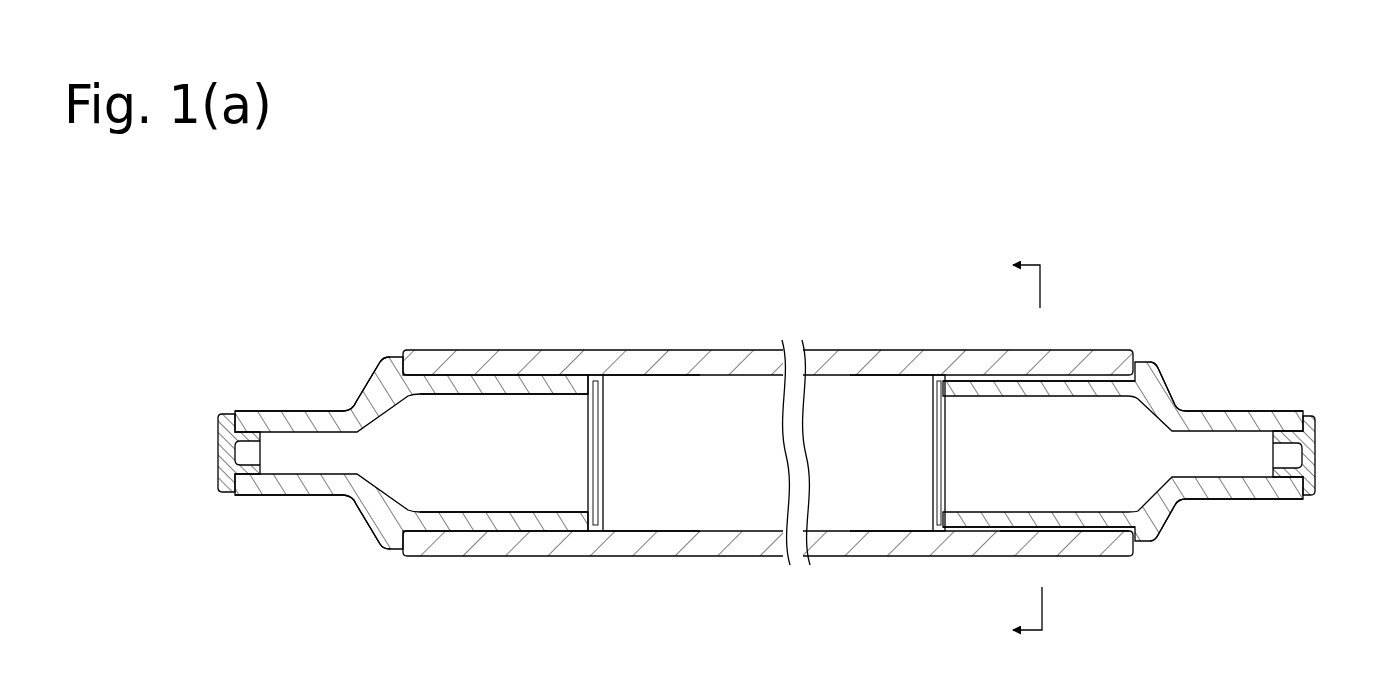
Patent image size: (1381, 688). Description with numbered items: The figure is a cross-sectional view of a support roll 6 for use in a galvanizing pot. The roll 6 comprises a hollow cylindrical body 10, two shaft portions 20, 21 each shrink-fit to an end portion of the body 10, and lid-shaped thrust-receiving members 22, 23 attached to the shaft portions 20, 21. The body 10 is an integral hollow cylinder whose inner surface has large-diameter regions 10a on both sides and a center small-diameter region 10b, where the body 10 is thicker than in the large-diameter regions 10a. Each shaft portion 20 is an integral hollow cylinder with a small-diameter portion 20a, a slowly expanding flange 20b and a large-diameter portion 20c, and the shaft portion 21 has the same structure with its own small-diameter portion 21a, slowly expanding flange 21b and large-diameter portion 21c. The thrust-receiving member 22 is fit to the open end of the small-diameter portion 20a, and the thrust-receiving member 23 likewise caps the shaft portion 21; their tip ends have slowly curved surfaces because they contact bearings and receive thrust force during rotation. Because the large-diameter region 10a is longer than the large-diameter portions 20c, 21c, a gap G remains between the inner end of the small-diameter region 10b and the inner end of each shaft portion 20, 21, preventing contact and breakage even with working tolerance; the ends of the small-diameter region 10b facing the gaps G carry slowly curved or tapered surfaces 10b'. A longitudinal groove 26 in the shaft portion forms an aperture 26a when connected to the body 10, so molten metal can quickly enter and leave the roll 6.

The support roll 6 is at (864, 251).
The body 10 is at (666, 329).
The large-diameter region 10a is at (490, 375).
The small-diameter region 10b is at (756, 434).
The slowly curved or tapered surface 10b' is at (768, 453).
The gap G is at (598, 377).
The shaft portion 20 is at (317, 384).
The small-diameter portion 20a is at (275, 496).
The slowly expanding flange 20b is at (384, 542).
The large-diameter portion 20c is at (493, 530).
The shaft portion 21 is at (1218, 366).
The small-diameter portion 21a is at (1266, 410).
The slowly expanding flange 21b is at (1150, 371).
The large-diameter portion 21c is at (1085, 380).
The thrust-receiving member 22 is at (217, 442).
The thrust-receiving member 23 is at (1317, 437).
The longitudinal groove 26 is at (1150, 541).
The aperture 26a is at (1047, 532).